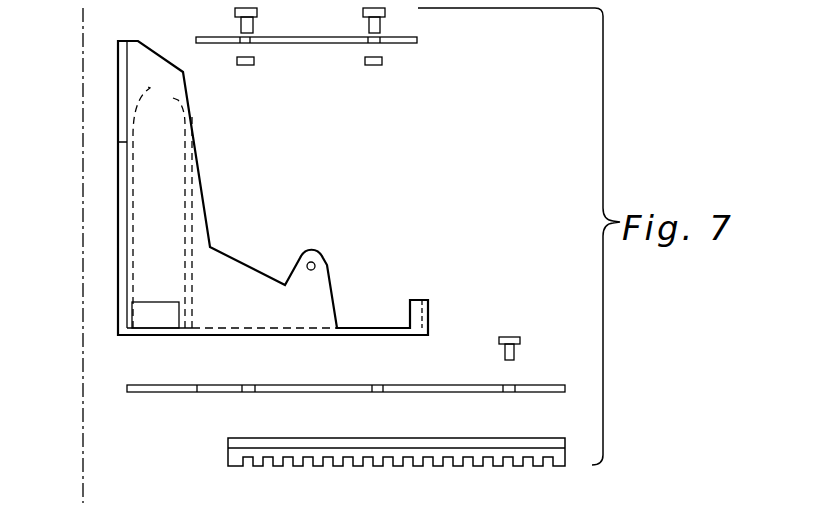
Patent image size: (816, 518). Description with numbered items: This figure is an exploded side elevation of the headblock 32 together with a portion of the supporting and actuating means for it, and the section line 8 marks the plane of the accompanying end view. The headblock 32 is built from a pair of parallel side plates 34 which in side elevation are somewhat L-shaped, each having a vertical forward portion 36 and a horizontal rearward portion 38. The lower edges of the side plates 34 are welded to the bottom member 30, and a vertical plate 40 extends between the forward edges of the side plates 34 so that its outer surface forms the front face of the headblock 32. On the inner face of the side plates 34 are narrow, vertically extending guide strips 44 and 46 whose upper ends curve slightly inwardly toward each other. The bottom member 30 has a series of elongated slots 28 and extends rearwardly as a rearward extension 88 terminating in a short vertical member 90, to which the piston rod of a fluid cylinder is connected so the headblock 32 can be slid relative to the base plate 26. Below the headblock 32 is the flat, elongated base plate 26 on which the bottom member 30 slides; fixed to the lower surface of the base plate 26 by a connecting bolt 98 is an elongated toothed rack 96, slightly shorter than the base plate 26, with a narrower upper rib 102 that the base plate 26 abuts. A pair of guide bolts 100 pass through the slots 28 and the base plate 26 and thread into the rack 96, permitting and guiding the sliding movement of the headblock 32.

The section line 8- 8 is at (103, 41).
The base plate 26 is at (428, 390).
The elongated slots 28 is at (505, 390).
The bottom member 30 is at (270, 323).
The headblock 32 is at (213, 199).
The side plates 34 is at (174, 216).
The vertical forward portion 36 is at (157, 78).
The horizontal rearward portion 38 is at (250, 288).
The vertical plate 40 is at (118, 90).
The guide strip 44 is at (137, 130).
The guide strip 46 is at (185, 118).
The rearward extension 88 is at (388, 327).
The short vertical member 90 is at (430, 308).
The toothed rack 96 is at (333, 467).
The connecting bolt 98 is at (521, 348).
The guide bolts 100 is at (255, 22).
The upper rib 102 is at (325, 447).